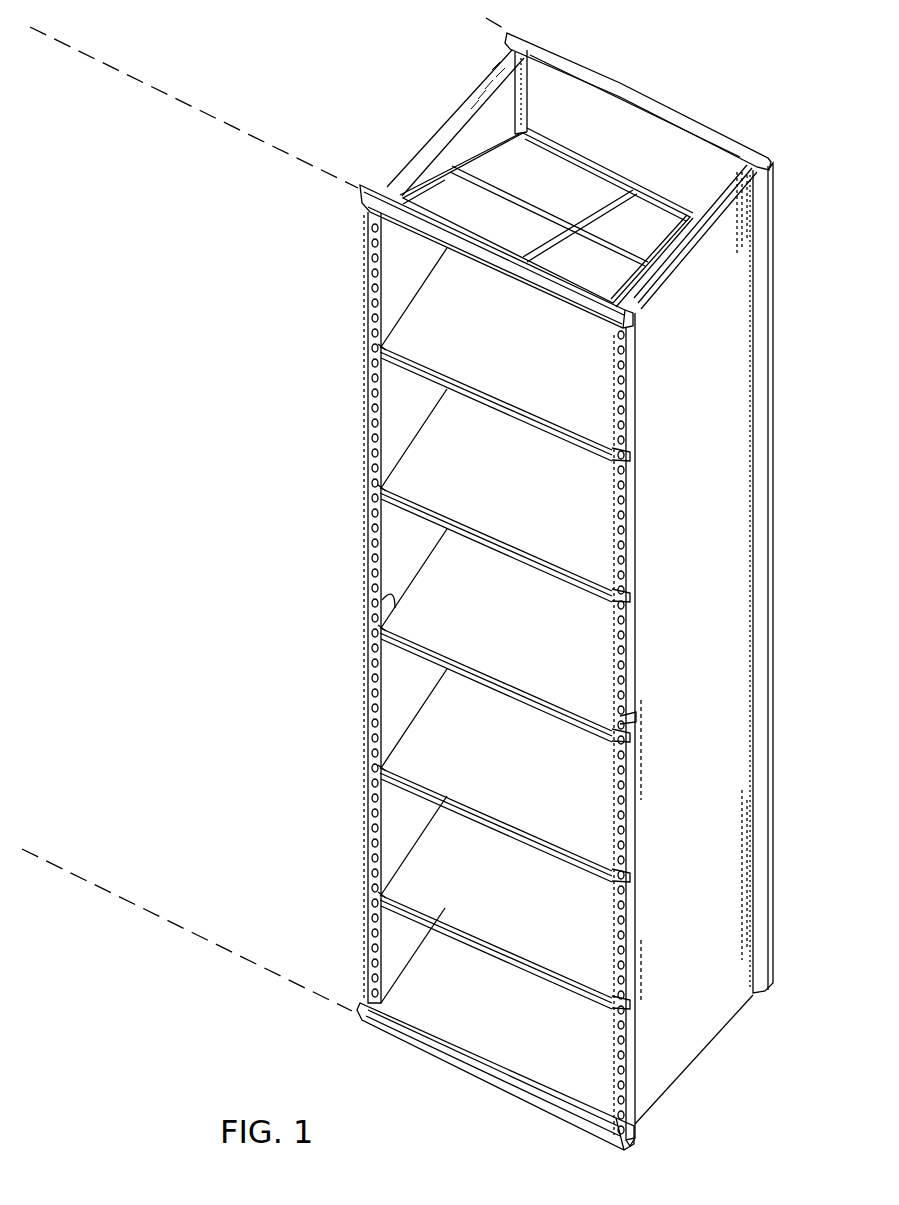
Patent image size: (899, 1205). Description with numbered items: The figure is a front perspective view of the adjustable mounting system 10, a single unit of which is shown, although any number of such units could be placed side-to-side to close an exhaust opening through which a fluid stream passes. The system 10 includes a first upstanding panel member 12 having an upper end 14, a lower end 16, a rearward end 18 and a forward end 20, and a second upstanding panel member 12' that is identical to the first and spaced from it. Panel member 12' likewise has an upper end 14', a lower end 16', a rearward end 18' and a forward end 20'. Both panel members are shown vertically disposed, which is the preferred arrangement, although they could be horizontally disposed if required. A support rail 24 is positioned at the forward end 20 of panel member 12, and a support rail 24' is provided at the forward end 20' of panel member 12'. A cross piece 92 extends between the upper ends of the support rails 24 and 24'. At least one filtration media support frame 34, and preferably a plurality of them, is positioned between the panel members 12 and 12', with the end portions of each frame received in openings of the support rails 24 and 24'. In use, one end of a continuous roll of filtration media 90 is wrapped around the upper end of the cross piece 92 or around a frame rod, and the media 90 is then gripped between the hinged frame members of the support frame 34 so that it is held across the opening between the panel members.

The adjustable mounting system 10 is at (651, 90).
The first upstanding panel member 12 is at (335, 607).
The upstanding panel member 12' is at (721, 659).
The upper end 14 is at (446, 123).
The upper end 14' is at (729, 237).
The lower end 16 is at (466, 1030).
The lower end 16' is at (707, 1059).
The rearward end 18 is at (566, 93).
The rearward end 18' is at (789, 578).
The forward end 20 is at (337, 609).
The forward end 20' is at (672, 729).
The support rail 24 is at (321, 610).
The support rail 24' is at (668, 732).
The filtration media support frame 34 is at (660, 196).
The filtration media 90 is at (522, 789).
The cross piece 92 is at (535, 290).